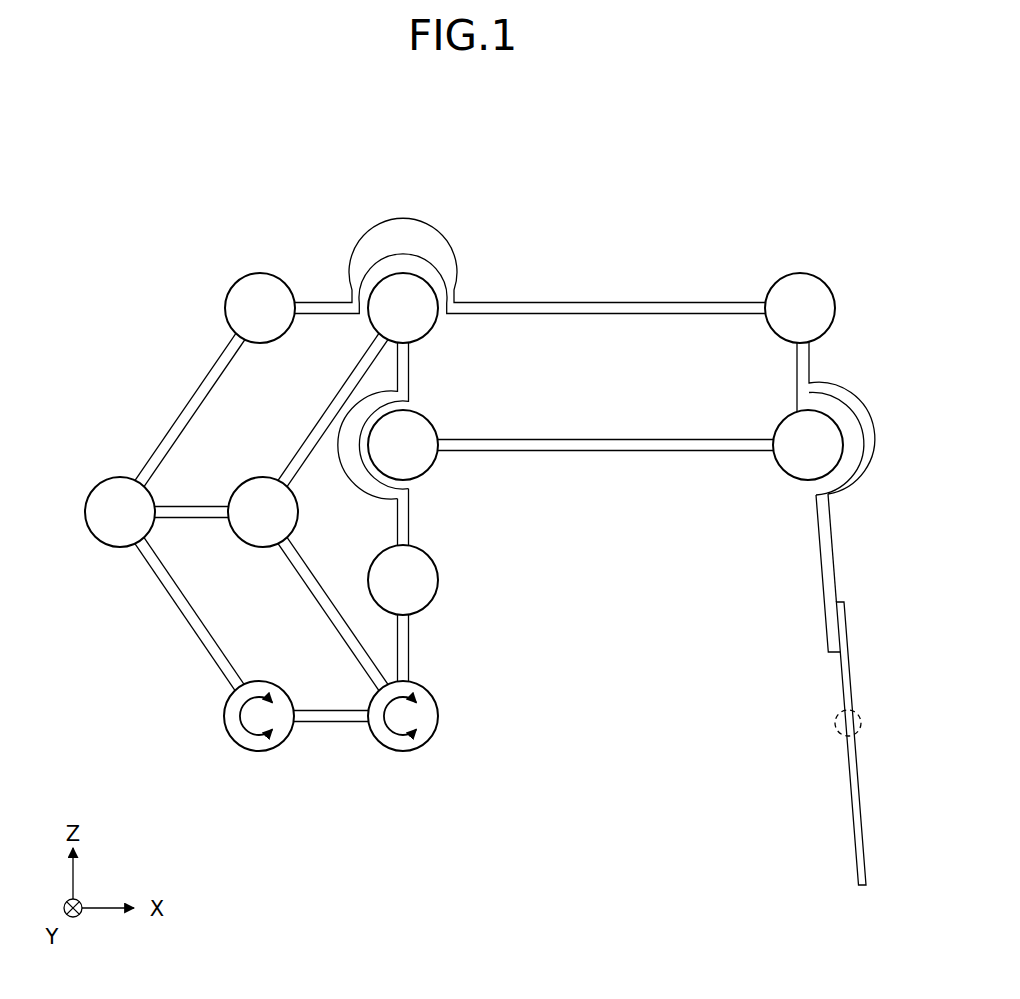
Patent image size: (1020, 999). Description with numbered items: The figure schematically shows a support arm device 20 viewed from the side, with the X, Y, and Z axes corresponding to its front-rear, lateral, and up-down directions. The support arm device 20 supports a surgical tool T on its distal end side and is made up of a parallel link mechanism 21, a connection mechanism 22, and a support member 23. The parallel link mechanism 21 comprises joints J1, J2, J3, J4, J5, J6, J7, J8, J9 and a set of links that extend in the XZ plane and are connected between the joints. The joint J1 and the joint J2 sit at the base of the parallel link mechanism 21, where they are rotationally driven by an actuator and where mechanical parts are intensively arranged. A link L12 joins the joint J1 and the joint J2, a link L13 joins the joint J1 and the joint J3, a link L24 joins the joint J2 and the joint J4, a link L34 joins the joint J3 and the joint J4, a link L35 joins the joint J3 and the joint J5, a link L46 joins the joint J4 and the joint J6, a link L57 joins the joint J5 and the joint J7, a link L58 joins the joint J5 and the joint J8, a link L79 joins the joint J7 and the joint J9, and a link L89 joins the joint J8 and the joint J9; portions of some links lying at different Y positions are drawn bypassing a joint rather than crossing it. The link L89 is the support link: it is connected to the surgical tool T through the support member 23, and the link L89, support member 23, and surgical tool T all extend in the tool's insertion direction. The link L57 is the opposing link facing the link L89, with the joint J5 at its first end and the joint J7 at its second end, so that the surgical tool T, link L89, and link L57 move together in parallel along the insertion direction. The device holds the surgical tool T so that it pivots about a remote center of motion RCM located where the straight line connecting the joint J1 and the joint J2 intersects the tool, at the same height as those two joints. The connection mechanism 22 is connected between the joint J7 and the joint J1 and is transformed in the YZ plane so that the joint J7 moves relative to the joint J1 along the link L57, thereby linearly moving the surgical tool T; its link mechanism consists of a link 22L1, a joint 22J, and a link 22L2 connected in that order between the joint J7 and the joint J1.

The support arm device 20 is at (118, 146).
The parallel link mechanism 21 is at (195, 231).
The connection mechanism 22 is at (530, 512).
The joint 22J is at (430, 580).
The link 22L1 is at (412, 530).
The link 22L2 is at (412, 630).
The support member 23 is at (832, 558).
The joint J1 is at (430, 718).
The joint J2 is at (226, 718).
The joint J3 is at (300, 515).
The joint J4 is at (88, 512).
The joint J5 is at (432, 326).
The joint J6 is at (236, 308).
The joint J7 is at (425, 432).
The joint J8 is at (822, 305).
The joint J9 is at (790, 467).
The link L12 is at (331, 710).
The link L13 is at (320, 608).
The link L24 is at (186, 619).
The link L34 is at (199, 507).
The link L35 is at (322, 425).
The link L46 is at (184, 407).
The link L57 is at (410, 372).
The link L58 is at (612, 302).
The link L79 is at (612, 440).
The link L89 is at (810, 372).
The remote center of motion RCM is at (836, 722).
The surgical tool T is at (856, 826).